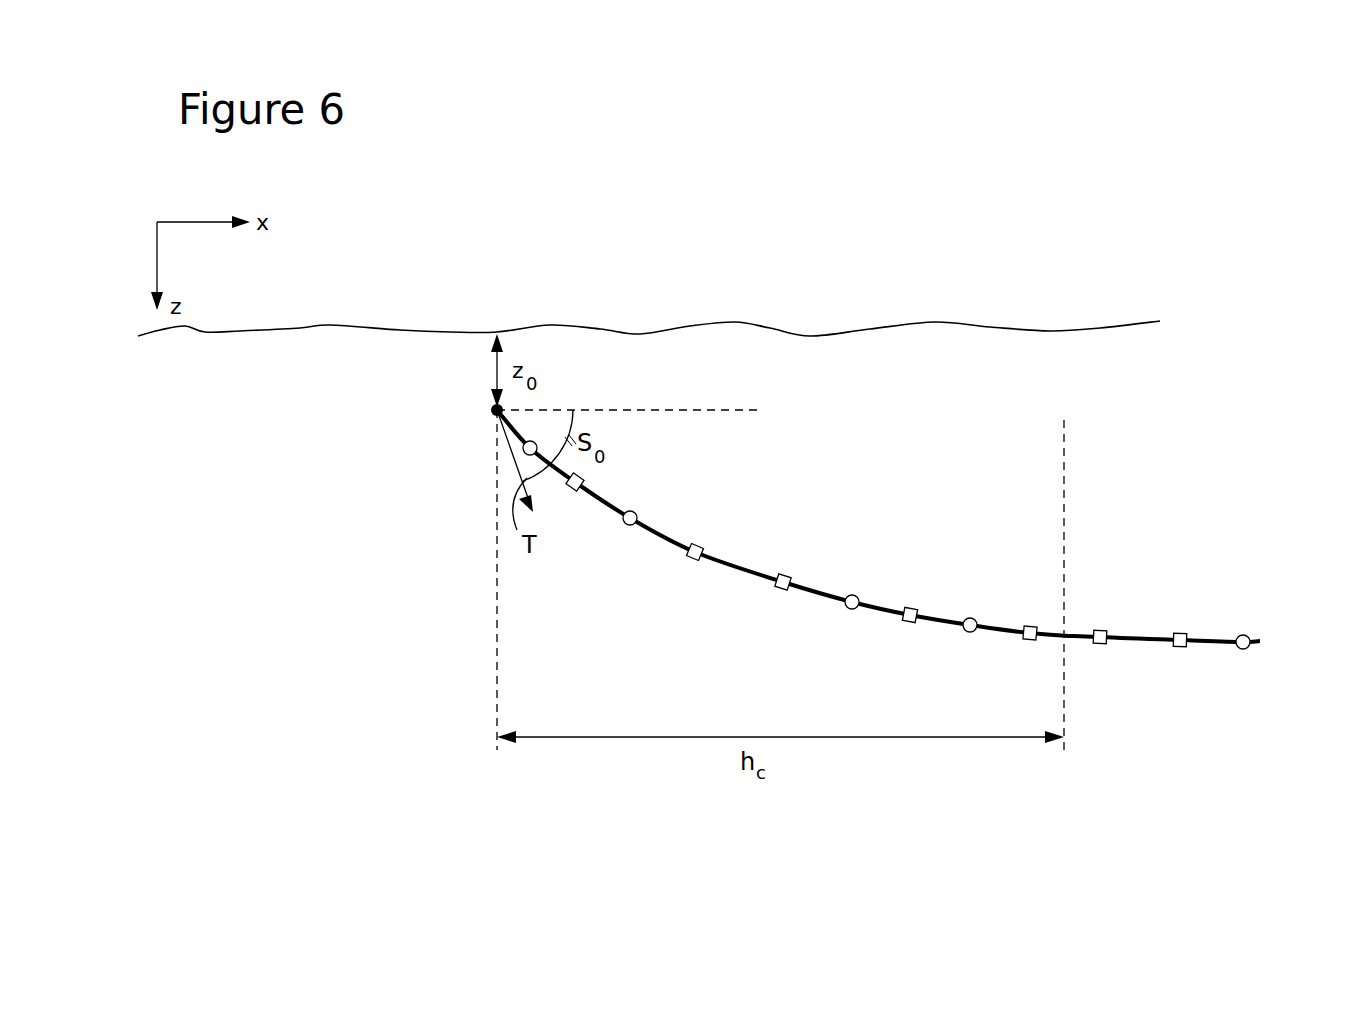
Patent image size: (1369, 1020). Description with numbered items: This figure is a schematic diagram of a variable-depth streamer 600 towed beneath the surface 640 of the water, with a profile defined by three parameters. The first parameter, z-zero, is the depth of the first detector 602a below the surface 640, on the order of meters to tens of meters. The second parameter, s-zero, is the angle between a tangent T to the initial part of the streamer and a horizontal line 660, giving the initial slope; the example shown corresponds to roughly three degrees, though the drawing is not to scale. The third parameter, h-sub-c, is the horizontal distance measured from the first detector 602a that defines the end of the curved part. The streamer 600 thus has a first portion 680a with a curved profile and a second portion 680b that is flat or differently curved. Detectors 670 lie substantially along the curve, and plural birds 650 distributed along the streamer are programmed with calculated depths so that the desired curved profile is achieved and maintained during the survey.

The streamer 600 is at (914, 532).
The first detector 602a is at (492, 410).
The surface of the water 640 is at (716, 322).
The birds 650 is at (640, 517).
The horizontal line 660 is at (697, 410).
The detectors 670 is at (583, 478).
The first portion of the streamer 680a is at (730, 558).
The second portion of the streamer 680b is at (1137, 640).